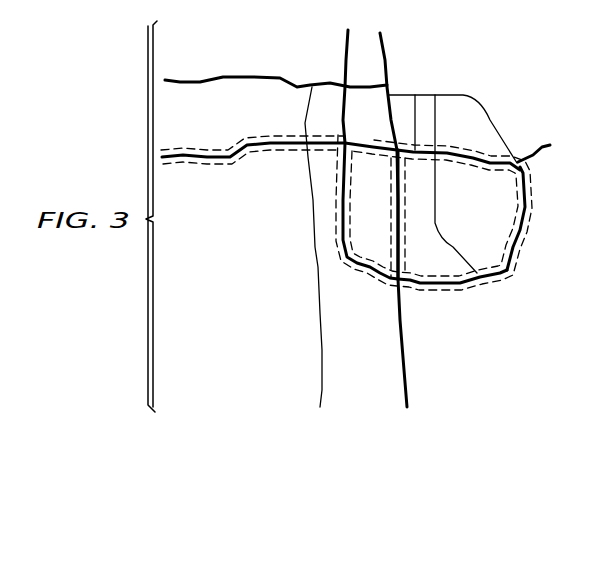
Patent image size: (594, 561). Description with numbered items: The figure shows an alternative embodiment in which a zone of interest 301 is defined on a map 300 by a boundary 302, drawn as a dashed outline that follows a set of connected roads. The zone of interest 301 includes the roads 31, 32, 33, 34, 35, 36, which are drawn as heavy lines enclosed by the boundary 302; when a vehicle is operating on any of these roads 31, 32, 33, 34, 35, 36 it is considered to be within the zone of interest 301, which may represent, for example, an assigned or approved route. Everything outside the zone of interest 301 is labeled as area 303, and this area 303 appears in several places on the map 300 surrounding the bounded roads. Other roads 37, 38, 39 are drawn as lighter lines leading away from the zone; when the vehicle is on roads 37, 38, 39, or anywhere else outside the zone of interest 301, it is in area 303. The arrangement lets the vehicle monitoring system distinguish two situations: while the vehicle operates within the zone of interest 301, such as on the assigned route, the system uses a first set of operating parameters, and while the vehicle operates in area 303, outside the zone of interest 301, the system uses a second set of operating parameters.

The map 300 is at (102, 67).
The road 38 is at (243, 77).
The area 303 is at (484, 75).
The zone of interest 301 is at (207, 146).
The road 36 is at (283, 140).
The road 31 is at (458, 148).
The road 39 is at (493, 130).
The road 32 is at (525, 195).
The boundary 302 is at (490, 267).
The road 34 is at (405, 248).
The road 33 is at (472, 287).
The road 35 is at (377, 270).
The road 37 is at (322, 353).